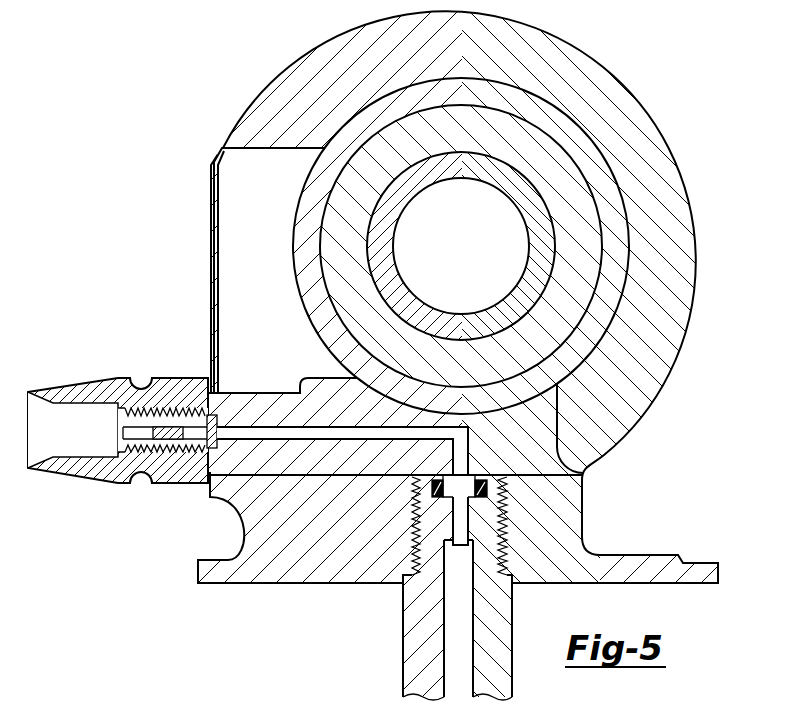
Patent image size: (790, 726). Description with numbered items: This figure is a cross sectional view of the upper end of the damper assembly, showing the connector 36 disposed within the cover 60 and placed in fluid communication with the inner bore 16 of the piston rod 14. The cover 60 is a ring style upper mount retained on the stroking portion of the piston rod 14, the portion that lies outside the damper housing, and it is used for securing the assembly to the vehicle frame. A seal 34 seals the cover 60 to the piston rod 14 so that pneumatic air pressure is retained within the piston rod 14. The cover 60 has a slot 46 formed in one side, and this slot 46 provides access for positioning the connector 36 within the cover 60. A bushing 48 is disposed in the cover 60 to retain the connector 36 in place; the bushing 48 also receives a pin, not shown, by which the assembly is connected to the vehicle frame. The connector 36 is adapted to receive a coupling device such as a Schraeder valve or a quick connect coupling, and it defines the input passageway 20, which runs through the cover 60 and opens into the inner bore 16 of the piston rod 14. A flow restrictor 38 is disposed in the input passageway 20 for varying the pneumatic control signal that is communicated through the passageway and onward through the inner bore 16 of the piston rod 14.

The piston rod 14 is at (405, 676).
The inner bore 16 is at (455, 640).
The input passageway 20 is at (262, 432).
The seal 34 is at (500, 485).
The connector 36 is at (118, 485).
The flow restrictor 38 is at (165, 427).
The slot 46 is at (238, 258).
The bushing 48 is at (580, 227).
The cover 60 is at (658, 150).